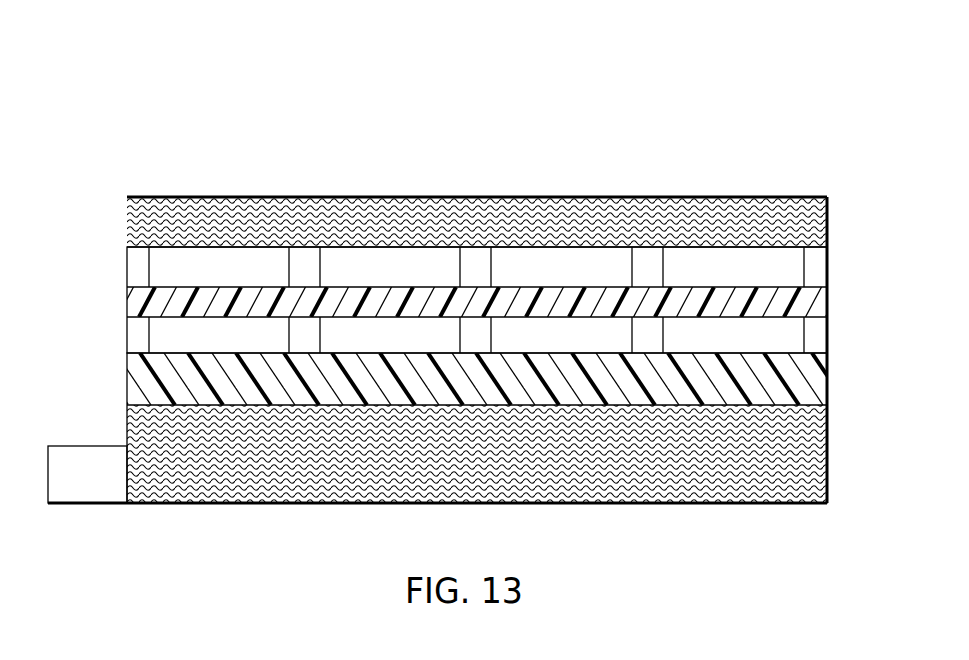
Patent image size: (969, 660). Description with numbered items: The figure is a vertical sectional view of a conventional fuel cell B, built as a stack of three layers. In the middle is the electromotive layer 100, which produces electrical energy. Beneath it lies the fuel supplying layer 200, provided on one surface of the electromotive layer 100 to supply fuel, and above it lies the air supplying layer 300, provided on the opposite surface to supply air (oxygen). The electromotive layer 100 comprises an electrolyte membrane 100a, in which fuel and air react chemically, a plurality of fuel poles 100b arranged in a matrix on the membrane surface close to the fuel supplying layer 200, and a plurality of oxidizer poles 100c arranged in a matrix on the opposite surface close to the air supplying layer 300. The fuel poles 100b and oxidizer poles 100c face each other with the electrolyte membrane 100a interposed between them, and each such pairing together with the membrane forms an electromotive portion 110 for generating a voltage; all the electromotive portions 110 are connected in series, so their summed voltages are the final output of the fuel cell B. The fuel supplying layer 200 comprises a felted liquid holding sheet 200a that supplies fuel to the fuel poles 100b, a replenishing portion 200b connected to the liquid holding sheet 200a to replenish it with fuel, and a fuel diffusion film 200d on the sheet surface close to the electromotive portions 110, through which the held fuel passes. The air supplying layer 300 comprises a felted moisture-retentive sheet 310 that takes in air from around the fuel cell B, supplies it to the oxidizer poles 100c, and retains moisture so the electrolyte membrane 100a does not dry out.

The air supplying layer 300 is at (836, 197).
The moisture-retentive sheet 310 is at (185, 197).
The electromotive layer 100 is at (836, 248).
The electrolyte membrane 100a is at (132, 302).
The fuel poles 100b is at (277, 329).
The oxidizer poles 100c is at (228, 256).
The electromotive portions 110 is at (300, 265).
The fuel supplying layer 200 is at (836, 356).
The liquid holding sheet 200a is at (224, 490).
The replenishing portion 200b is at (97, 490).
The fuel diffusion film 200d is at (134, 378).
The fuel cell B is at (690, 68).